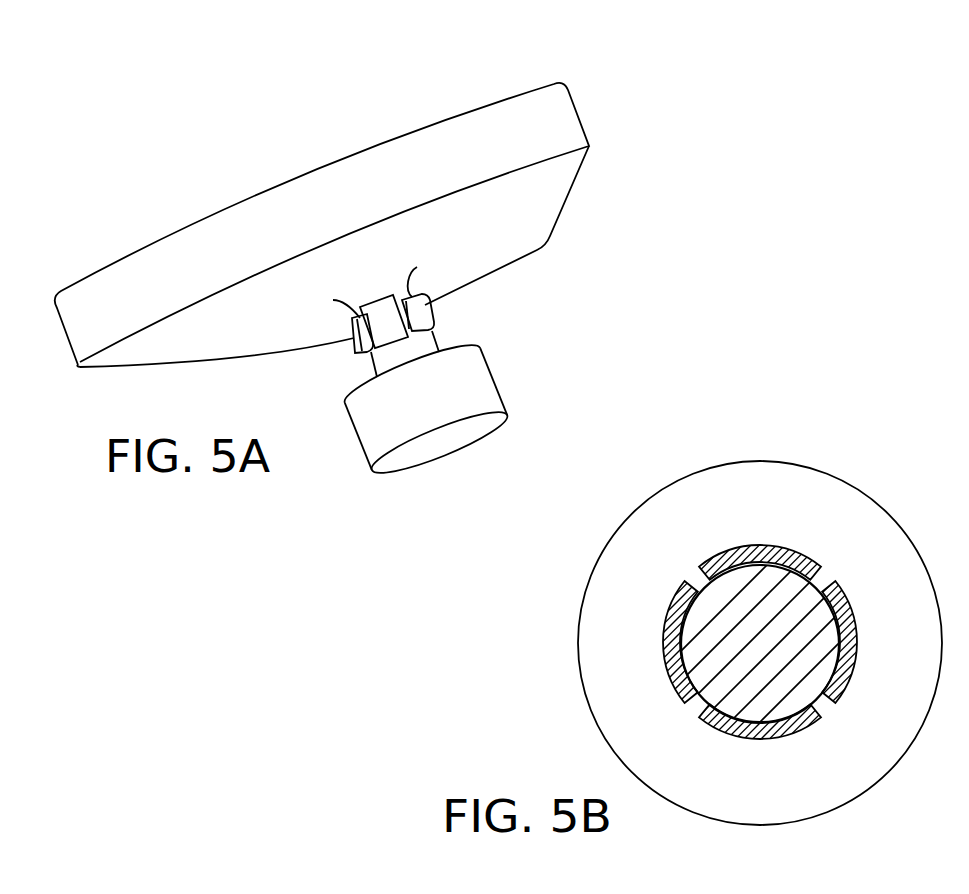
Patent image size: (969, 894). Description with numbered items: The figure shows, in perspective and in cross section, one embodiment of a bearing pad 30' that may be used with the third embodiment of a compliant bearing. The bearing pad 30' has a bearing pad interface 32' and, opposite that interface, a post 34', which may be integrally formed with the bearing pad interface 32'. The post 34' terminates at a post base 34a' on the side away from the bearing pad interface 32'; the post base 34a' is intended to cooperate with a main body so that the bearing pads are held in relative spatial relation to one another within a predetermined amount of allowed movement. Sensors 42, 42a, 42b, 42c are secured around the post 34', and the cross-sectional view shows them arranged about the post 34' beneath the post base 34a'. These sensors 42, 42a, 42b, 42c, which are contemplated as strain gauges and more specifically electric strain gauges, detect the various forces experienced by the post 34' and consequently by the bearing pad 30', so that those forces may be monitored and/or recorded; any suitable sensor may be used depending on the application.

In FIG. 5A, the bearing pad 30' is at (427, 272).
In FIG. 5A, the bearing pad interface 32' is at (322, 189).
In FIG. 5A, the post 34' is at (478, 352).
In FIG. 5B, the post 34' is at (761, 591).
In FIG. 5A, the post base 34a' is at (404, 439).
In FIG. 5B, the post base 34a' is at (702, 643).
In FIG. 5A, the sensor 42 is at (432, 309).
In FIG. 5B, the sensor 42 is at (757, 547).
In FIG. 5A, the sensor 42a is at (385, 307).
In FIG. 5B, the sensor 42a is at (853, 637).
In FIG. 5A, the sensor 42b is at (355, 340).
In FIG. 5B, the sensor 42b is at (763, 732).
In FIG. 5B, the sensor 42c is at (678, 697).